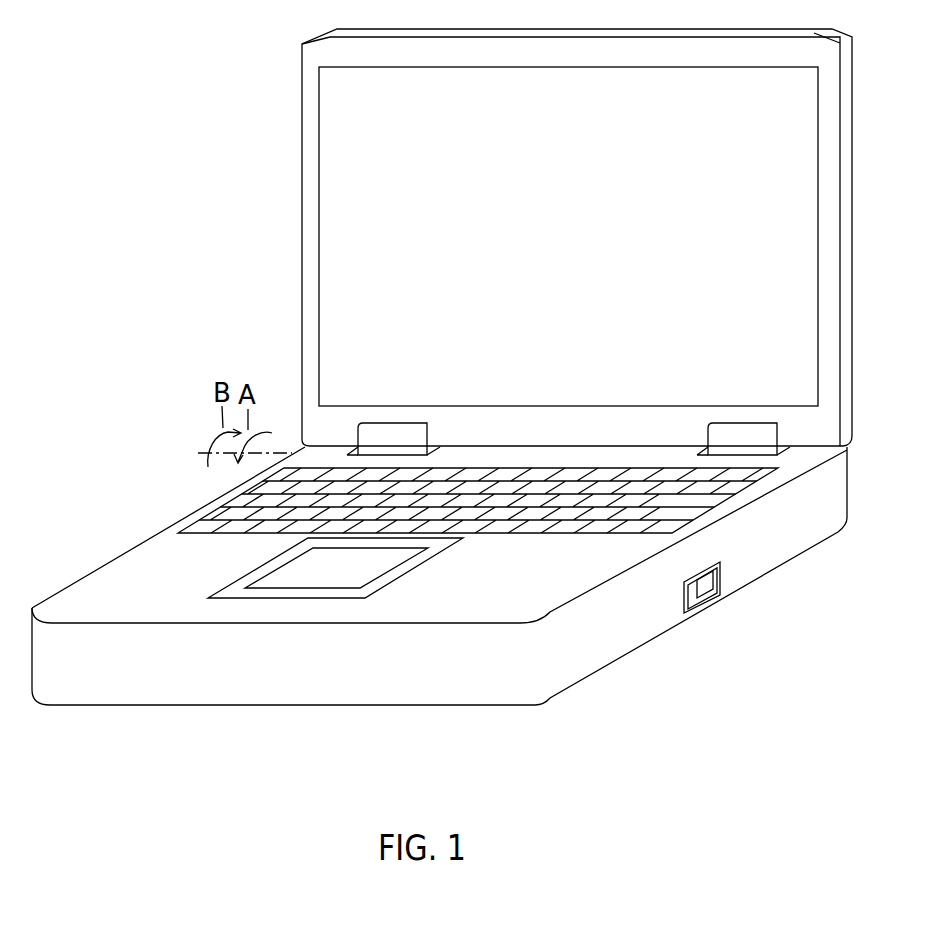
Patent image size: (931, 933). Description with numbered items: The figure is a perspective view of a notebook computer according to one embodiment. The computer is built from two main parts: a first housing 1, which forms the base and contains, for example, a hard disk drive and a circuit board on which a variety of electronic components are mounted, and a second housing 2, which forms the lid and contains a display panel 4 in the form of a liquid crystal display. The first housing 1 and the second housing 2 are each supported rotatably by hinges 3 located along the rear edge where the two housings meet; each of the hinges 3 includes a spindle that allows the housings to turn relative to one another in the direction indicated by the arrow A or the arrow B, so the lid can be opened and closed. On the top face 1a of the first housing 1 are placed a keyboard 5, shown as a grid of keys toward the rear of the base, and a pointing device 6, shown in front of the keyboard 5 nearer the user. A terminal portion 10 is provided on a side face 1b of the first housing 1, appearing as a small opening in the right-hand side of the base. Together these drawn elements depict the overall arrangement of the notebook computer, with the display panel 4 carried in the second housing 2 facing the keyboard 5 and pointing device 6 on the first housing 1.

The first housing 1 is at (748, 558).
The top face 1a is at (141, 574).
The side face 1b is at (615, 629).
The second housing 2 is at (312, 267).
The hinges 3 is at (366, 438).
The display panel 4 is at (338, 172).
The keyboard 5 is at (213, 517).
The pointing device 6 is at (306, 569).
The terminal portion 10 is at (713, 597).